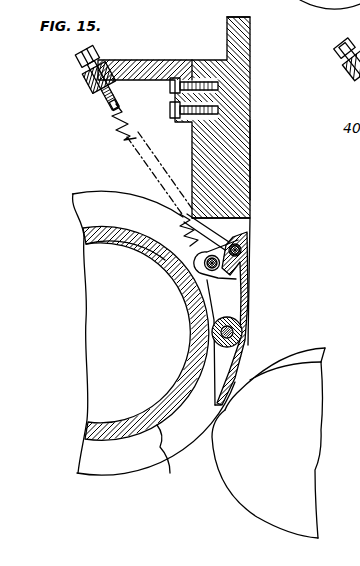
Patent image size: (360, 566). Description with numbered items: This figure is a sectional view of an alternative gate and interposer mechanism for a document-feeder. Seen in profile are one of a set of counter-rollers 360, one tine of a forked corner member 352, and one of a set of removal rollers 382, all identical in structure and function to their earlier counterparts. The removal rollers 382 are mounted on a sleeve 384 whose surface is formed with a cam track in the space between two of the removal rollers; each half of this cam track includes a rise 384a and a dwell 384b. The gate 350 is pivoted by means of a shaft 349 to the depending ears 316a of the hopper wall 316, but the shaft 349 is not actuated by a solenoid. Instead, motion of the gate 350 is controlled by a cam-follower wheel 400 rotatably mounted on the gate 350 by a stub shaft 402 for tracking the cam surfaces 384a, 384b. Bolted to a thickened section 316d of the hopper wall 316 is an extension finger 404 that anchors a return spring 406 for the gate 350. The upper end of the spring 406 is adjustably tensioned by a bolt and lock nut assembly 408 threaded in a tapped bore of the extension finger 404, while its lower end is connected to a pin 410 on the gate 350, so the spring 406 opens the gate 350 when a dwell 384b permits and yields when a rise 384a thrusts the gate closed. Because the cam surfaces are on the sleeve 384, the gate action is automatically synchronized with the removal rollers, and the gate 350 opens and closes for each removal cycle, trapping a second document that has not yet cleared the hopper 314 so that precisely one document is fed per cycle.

The hopper 314 is at (260, 74).
The hopper wall 316 is at (232, 30).
The depending ears 316a is at (240, 230).
The thickened section 316d is at (251, 163).
The shaft 349 is at (249, 250).
The gate 350 is at (222, 407).
The forked corner member 352 is at (305, 350).
The counter-roller 360 is at (308, 395).
The removal roller 382 is at (113, 193).
The sleeve 384 is at (142, 219).
The rise 384a is at (170, 473).
The dwell 384b is at (152, 249).
The cam-follower wheel 400 is at (240, 360).
The stub shaft 402 is at (242, 330).
The extension finger 404 is at (156, 80).
The return spring 406 is at (130, 132).
The bolt and lock nut assembly 408 is at (78, 66).
The pin 410 is at (236, 279).